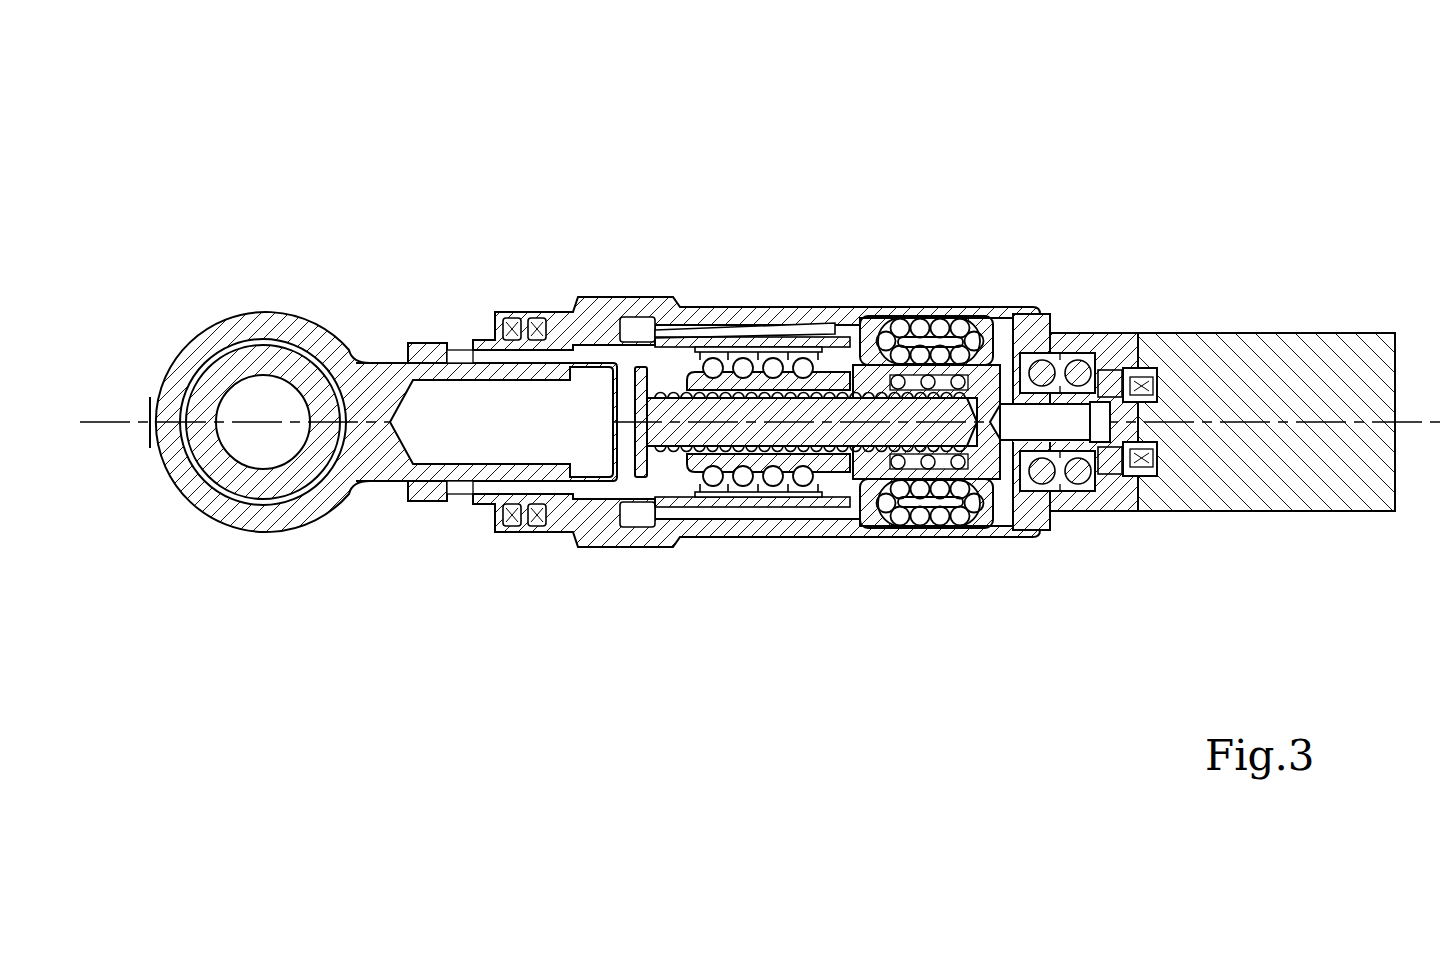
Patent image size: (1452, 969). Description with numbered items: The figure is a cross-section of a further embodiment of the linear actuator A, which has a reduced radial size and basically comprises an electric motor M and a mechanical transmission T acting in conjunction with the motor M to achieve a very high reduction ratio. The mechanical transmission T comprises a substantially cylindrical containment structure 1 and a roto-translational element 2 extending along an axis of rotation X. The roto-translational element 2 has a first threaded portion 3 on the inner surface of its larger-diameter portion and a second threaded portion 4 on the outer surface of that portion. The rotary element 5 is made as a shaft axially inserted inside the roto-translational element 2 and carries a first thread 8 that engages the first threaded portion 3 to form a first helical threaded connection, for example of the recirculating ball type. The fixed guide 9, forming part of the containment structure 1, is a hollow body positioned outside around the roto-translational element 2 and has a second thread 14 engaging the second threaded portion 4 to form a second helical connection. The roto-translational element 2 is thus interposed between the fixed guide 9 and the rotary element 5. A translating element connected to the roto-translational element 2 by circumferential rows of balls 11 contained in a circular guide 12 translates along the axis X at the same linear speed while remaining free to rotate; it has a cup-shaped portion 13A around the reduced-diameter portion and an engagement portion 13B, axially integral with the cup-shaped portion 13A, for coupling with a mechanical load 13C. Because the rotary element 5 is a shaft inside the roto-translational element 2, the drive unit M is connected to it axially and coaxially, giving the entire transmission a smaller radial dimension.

The containment structure 1 is at (753, 301).
The roto-translational element 2 is at (874, 472).
The first threaded portion 3 is at (882, 378).
The second threaded portion 4 is at (958, 362).
The rotary element 5 is at (795, 434).
The first thread 8 is at (659, 458).
The fixed guide 9 is at (962, 541).
The circumferential rows of balls 11 is at (743, 480).
The circular guide 12 is at (710, 350).
The cup-shaped portion 13A is at (682, 487).
The engagement portion 13B is at (475, 488).
The mechanical load 13C is at (360, 348).
The second thread 14 is at (805, 330).
The linear actuator A is at (416, 160).
The mechanical transmission T is at (1099, 221).
The electric motor M is at (1275, 331).
The axis of rotation X is at (1432, 421).